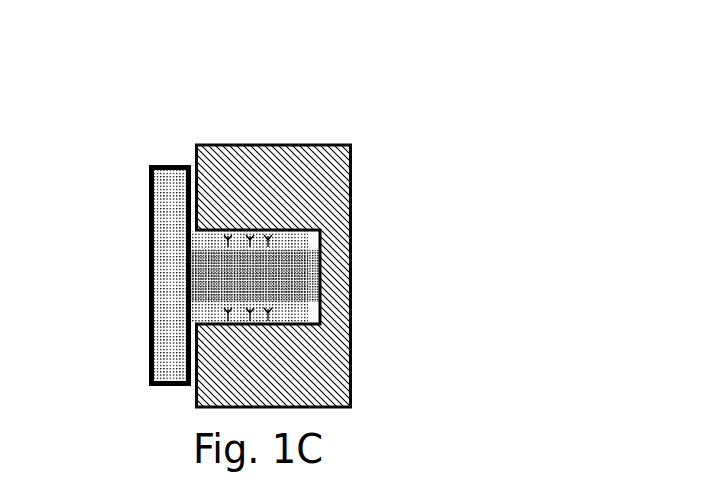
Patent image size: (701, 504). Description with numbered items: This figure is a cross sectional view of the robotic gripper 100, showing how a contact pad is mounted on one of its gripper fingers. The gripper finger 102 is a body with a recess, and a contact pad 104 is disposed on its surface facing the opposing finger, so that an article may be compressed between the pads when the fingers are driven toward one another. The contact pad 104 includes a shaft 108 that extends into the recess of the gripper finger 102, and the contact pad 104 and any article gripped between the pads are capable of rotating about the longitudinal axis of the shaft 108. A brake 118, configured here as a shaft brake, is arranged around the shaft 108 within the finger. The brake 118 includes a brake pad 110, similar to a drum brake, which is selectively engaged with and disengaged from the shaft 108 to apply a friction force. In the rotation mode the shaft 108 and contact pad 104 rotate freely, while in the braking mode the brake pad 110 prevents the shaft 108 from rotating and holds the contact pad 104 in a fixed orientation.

The robotic gripper 100 is at (203, 117).
The gripper finger 102 is at (263, 187).
The contact pad 104 is at (167, 248).
The shaft 108 is at (318, 293).
The brake pad 110 is at (297, 241).
The brake 118 is at (335, 270).